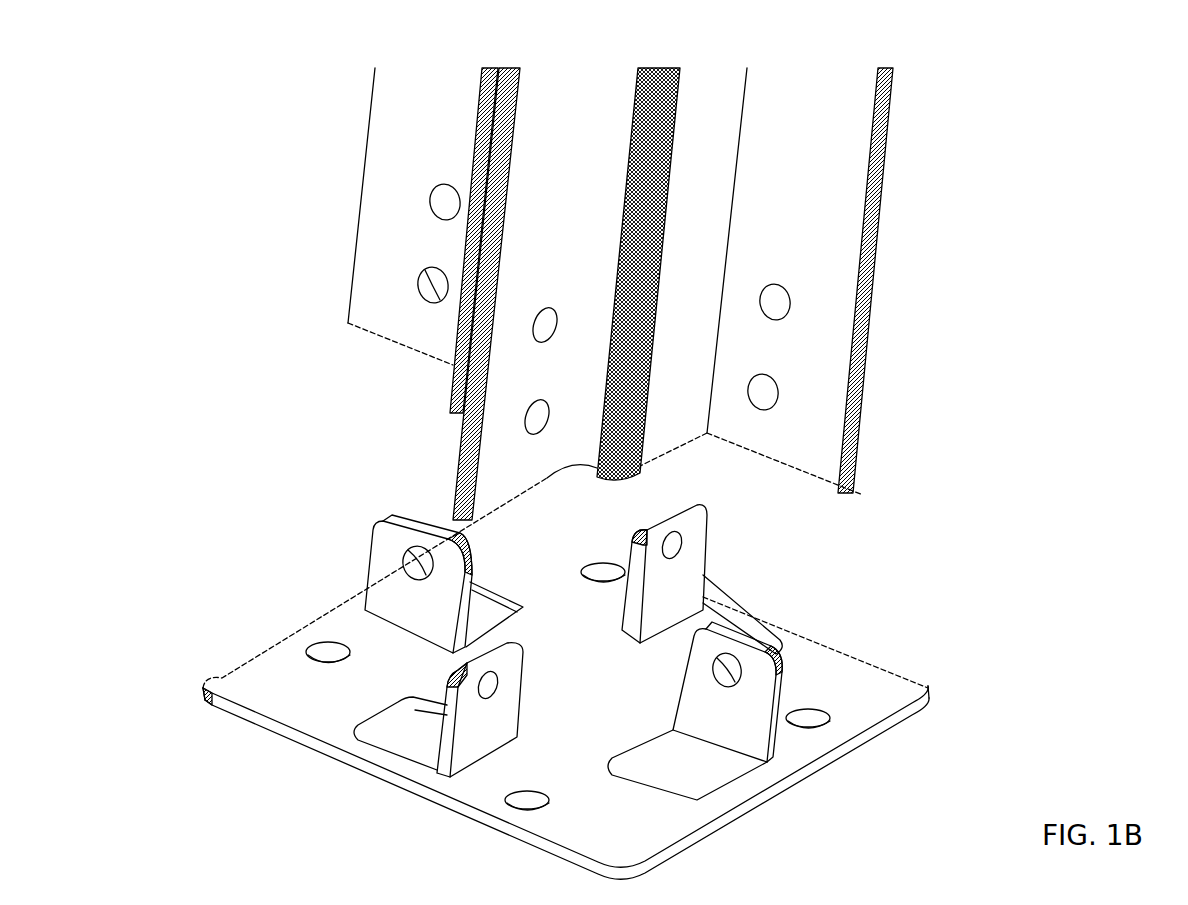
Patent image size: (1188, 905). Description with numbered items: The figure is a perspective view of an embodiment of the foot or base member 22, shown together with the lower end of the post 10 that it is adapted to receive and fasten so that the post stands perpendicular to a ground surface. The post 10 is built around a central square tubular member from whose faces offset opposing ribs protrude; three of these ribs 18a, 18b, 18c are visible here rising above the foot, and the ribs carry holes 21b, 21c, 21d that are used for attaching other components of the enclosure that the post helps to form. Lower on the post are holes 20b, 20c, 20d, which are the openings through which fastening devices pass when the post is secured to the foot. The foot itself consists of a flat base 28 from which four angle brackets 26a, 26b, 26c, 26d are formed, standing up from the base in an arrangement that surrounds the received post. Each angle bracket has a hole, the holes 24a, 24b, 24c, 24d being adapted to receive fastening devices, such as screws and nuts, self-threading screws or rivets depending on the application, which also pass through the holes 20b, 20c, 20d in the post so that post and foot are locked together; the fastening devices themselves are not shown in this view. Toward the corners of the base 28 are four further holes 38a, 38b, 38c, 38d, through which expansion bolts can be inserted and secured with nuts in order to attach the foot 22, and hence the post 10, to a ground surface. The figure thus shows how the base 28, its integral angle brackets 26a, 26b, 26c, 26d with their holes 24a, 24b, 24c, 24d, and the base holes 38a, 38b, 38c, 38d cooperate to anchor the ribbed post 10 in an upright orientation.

The post 10 is at (893, 137).
The rib 18a is at (382, 138).
The rib 18b is at (487, 485).
The rib 18c is at (822, 477).
The hole 20b is at (525, 420).
The hole 20c is at (418, 288).
The hole 20d is at (780, 398).
The hole 21b is at (533, 338).
The hole 21c is at (430, 198).
The hole 21d is at (790, 307).
The foot 22 is at (932, 683).
The hole 24a is at (683, 547).
The hole 24b is at (492, 680).
The hole 24c is at (405, 560).
The hole 24d is at (735, 672).
The angle bracket 26a is at (687, 593).
The angle bracket 26b is at (480, 748).
The angle bracket 26c is at (397, 600).
The angle bracket 26d is at (760, 705).
The base 28 is at (606, 699).
The hole 38a is at (602, 558).
The hole 38b is at (527, 812).
The hole 38c is at (308, 652).
The hole 38d is at (815, 730).